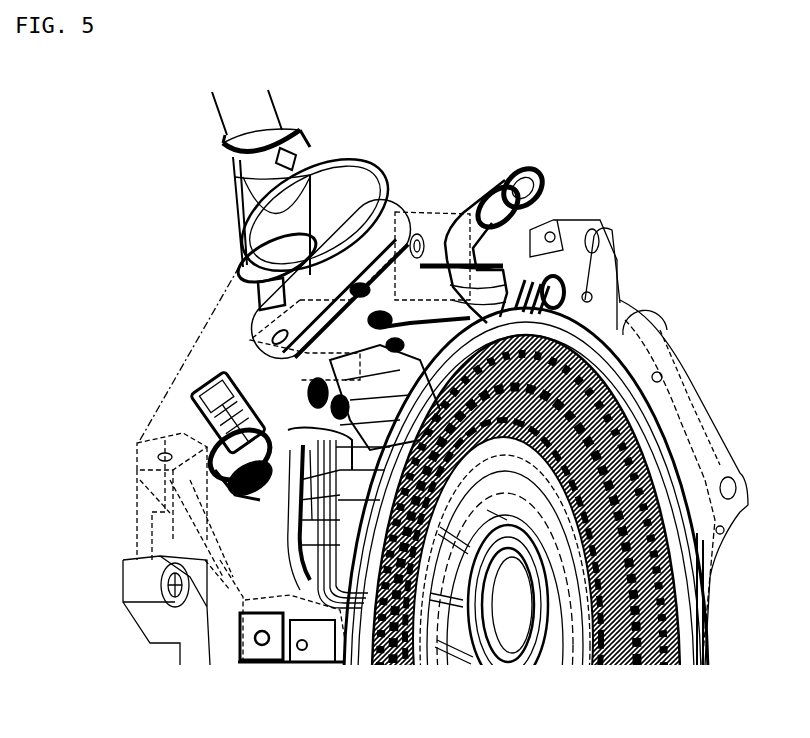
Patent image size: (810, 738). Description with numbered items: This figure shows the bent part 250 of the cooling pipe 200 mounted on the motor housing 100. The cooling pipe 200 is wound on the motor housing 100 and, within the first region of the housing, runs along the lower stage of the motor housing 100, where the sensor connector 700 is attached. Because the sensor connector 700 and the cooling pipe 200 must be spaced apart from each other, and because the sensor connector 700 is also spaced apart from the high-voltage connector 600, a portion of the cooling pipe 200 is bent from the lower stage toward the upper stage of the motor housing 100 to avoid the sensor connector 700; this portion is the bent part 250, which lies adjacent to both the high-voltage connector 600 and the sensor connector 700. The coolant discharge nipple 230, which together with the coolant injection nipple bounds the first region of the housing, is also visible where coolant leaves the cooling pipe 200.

The motor housing 100 is at (613, 263).
The cooling pipe 200 is at (288, 557).
The coolant discharge nipple 230 is at (532, 170).
The bent part 250 is at (290, 508).
The high-voltage connector 600 is at (313, 149).
The sensor connector 700 is at (213, 378).